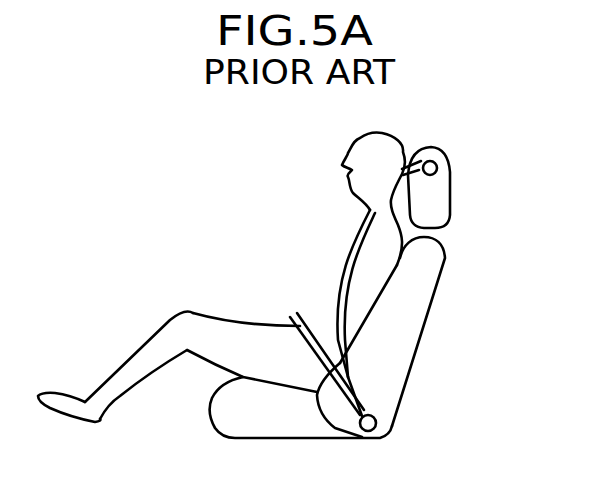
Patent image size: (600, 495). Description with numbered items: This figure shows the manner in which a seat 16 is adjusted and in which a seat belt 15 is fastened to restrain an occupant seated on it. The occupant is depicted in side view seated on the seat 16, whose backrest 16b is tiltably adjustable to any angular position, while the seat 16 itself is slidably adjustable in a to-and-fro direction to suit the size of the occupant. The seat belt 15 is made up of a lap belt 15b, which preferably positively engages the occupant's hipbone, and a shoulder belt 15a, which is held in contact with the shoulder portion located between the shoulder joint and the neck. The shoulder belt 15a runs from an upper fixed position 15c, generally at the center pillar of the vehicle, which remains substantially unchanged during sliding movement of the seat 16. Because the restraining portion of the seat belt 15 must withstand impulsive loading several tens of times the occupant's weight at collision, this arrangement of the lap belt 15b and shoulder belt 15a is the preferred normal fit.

The seat belt 15 is at (384, 292).
The shoulder belt 15a is at (350, 258).
The lap belt 15b is at (292, 314).
The upper fixed position 15c is at (438, 167).
The seat 16 is at (365, 292).
The backrest 16b is at (403, 328).